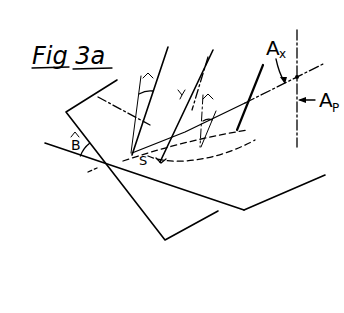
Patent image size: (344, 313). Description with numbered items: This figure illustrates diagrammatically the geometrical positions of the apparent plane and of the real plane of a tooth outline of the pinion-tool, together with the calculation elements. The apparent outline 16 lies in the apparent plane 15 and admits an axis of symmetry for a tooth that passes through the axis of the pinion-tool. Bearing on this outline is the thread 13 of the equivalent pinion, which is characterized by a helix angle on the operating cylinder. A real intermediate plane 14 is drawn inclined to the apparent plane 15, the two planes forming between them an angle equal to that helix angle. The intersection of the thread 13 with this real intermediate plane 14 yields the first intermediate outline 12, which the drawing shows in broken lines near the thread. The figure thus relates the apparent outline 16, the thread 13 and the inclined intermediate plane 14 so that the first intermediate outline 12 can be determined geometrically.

The first intermediate outline 12 is at (220, 158).
The thread 13 is at (183, 56).
The real intermediate plane 14 is at (172, 218).
The apparent plane 15 is at (247, 189).
The apparent outline 16 is at (228, 136).